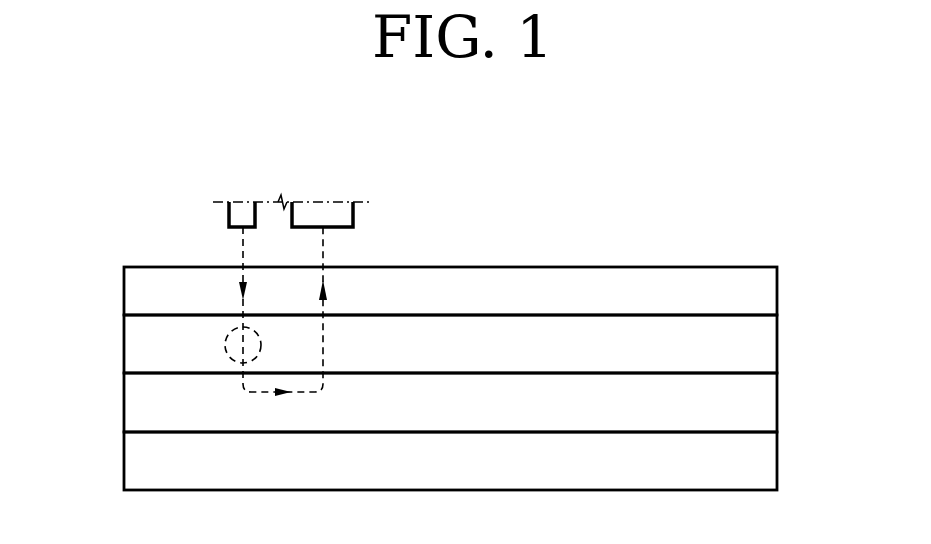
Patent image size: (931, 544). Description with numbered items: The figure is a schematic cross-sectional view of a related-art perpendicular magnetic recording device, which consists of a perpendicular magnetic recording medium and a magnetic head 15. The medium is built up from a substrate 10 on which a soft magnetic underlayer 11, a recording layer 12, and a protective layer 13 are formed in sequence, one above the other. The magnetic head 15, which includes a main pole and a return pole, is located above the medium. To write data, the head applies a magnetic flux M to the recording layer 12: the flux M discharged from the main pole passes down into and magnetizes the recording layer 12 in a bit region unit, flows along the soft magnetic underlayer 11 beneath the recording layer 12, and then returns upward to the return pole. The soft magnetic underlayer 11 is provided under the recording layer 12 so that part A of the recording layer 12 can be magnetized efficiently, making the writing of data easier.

The substrate 10 is at (770, 460).
The soft magnetic underlayer 11 is at (770, 402).
The recording layer 12 is at (770, 343).
The protective layer 13 is at (770, 294).
The magnetic head 15 is at (353, 193).
The magnetic flux M is at (328, 203).
The part of the recording layer A is at (225, 343).